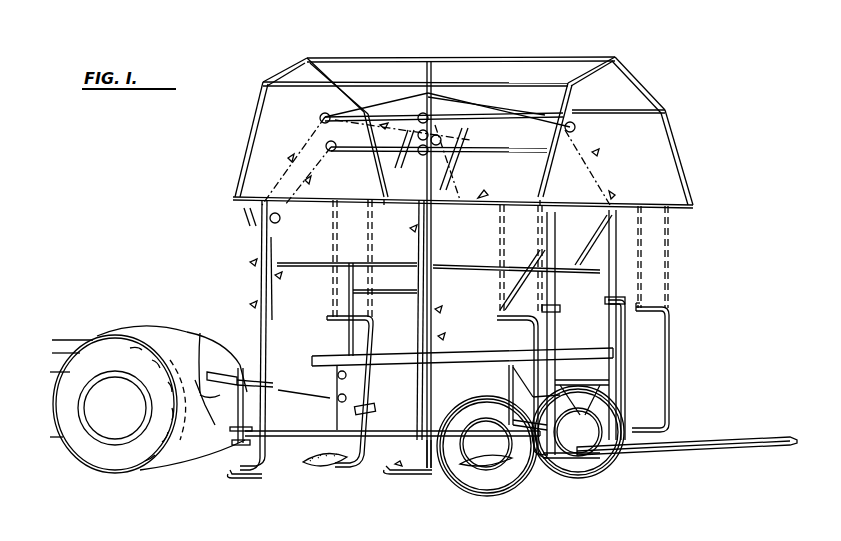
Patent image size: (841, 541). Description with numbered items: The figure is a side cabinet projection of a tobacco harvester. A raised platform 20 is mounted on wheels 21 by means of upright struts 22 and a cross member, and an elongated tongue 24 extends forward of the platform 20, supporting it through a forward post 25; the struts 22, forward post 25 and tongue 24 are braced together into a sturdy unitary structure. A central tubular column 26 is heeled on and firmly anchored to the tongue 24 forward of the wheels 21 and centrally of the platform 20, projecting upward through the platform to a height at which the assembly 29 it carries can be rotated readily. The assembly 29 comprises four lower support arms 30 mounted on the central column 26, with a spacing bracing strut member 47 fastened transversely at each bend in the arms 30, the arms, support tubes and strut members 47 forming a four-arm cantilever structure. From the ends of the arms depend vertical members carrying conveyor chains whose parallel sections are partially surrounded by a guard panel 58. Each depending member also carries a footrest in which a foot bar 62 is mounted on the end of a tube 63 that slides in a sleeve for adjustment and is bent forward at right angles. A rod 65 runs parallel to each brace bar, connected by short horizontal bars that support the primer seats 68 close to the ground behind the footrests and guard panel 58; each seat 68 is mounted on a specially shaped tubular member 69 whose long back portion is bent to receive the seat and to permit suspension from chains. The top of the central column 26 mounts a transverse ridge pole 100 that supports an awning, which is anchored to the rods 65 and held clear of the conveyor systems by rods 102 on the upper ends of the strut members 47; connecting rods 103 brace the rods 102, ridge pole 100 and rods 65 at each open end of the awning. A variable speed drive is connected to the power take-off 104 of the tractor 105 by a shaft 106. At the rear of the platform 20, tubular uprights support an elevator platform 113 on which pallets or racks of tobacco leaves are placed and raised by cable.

The transverse ridge pole 100 is at (458, 60).
The connecting rods 103 is at (286, 67).
The rods 102 is at (355, 84).
The central tubular column 26 is at (430, 74).
The lower support arms 30 is at (526, 150).
The spacing bracing strut member 47 is at (318, 114).
The rod 65 is at (487, 196).
The assembly 29 is at (732, 221).
The guard panel 58 is at (268, 312).
The raised platform 20 is at (330, 357).
The forward post 25 is at (328, 391).
The tubular member 69 is at (368, 390).
The elongated tongue 24 is at (276, 432).
The tube 63 is at (261, 461).
The foot bar 62 is at (240, 475).
The primer seat 68 is at (308, 470).
The wheels 21 is at (483, 481).
The struts 22 is at (510, 385).
The elevator platform 113 is at (705, 440).
The power take-off 104 is at (203, 345).
The shaft 106 is at (231, 376).
The tractor 105 is at (118, 460).